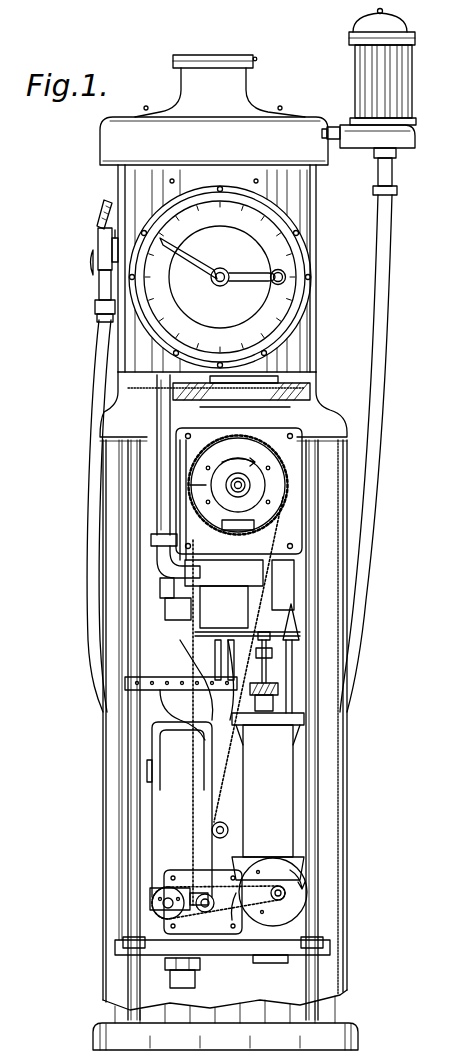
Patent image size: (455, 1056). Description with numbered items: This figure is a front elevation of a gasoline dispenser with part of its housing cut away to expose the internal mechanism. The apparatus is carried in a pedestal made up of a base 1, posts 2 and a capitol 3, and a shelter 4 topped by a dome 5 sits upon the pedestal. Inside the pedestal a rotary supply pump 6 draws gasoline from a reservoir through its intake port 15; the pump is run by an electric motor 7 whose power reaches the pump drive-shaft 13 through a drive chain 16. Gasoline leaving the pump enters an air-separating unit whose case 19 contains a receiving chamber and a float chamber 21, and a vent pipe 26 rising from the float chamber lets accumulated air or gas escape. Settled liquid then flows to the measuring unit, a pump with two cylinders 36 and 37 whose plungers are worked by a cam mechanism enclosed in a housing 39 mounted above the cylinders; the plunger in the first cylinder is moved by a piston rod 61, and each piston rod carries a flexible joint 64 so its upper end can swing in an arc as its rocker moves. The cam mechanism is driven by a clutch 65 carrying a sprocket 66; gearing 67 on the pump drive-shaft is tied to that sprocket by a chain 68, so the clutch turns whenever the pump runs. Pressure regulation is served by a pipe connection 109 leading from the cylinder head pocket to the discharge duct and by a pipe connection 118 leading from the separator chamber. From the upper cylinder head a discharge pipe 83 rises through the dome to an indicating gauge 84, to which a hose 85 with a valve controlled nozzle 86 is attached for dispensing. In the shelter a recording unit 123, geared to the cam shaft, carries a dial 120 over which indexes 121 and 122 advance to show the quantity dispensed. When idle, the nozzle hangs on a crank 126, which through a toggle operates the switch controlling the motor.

The base 1 is at (344, 1031).
The posts 2 is at (318, 776).
The capitol 3 is at (325, 410).
The shelter 4 is at (317, 192).
The dome 5 is at (214, 110).
The pump 6 is at (203, 893).
The electric motor 7 is at (270, 892).
The drive-shaft 13 is at (153, 911).
The intake port 15 is at (180, 975).
The drive chain 16 is at (274, 902).
The case 19 is at (179, 816).
The float chamber 21 is at (152, 739).
The vent pipe 26 is at (221, 560).
The cylinder 36 is at (268, 760).
The cylinder 37 is at (285, 657).
The housing 39 is at (239, 491).
The piston rod 61 is at (275, 661).
The flexible joint 64 is at (273, 643).
The clutch 65 is at (288, 470).
The sprocket 66 is at (201, 498).
The gearing 67 is at (218, 912).
The chain 68 is at (290, 483).
The discharge pipe 83 is at (334, 126).
The indicating gauge 84 is at (409, 140).
The hose 85 is at (393, 231).
The valve controlled nozzle 86 is at (96, 264).
The pipe connection 109 is at (170, 641).
The pipe connection 118 is at (190, 694).
The dial 120 is at (220, 277).
The index 121 is at (194, 262).
The index 122 is at (241, 284).
The recording unit 123 is at (313, 260).
The crank 126 is at (94, 247).